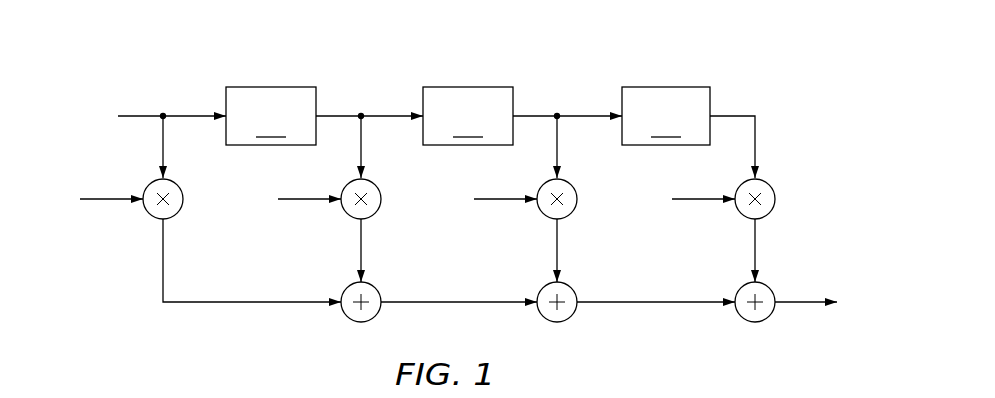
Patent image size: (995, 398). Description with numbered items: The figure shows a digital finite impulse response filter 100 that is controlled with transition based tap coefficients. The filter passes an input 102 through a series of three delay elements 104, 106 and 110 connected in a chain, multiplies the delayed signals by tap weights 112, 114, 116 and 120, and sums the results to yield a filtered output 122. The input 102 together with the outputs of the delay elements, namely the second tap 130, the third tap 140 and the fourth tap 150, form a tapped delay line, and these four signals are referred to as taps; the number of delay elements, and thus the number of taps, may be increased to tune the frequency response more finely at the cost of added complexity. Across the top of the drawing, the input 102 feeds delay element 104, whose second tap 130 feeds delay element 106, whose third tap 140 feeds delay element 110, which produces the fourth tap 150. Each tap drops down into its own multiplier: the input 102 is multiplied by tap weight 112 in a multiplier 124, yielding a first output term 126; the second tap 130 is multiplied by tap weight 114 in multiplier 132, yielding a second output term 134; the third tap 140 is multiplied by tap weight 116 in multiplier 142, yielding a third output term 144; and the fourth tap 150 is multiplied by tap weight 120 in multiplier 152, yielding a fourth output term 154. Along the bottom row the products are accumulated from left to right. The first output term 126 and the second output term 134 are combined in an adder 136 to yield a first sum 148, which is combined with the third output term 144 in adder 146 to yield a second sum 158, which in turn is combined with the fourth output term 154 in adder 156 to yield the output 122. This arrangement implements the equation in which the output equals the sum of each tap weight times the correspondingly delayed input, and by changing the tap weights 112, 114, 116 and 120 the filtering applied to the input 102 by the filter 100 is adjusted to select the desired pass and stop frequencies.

The digital finite impulse response filter 100 is at (792, 88).
The input 102 is at (113, 105).
The delay element 104 is at (271, 116).
The delay element 106 is at (468, 116).
The delay element 110 is at (666, 116).
The tap weight 112 is at (79, 190).
The tap weight 114 is at (274, 190).
The tap weight 116 is at (474, 190).
The tap weight 120 is at (669, 190).
The output 122 is at (812, 278).
The multiplier 124 is at (150, 216).
The first output term 126 is at (242, 304).
The second tap 130 is at (362, 138).
The multiplier 132 is at (347, 216).
The second output term 134 is at (362, 245).
The adder 136 is at (343, 318).
The third tap 140 is at (558, 138).
The multiplier 142 is at (543, 216).
The third output term 144 is at (558, 245).
The adder 146 is at (540, 318).
The first sum 148 is at (448, 304).
The fourth tap 150 is at (756, 138).
The multiplier 152 is at (740, 216).
The fourth output term 154 is at (756, 251).
The adder 156 is at (738, 318).
The second sum 158 is at (645, 304).